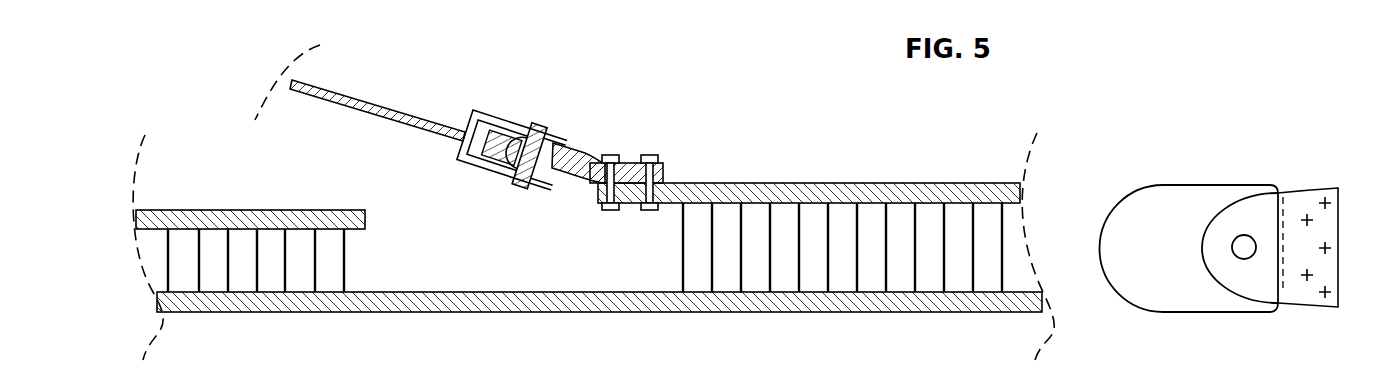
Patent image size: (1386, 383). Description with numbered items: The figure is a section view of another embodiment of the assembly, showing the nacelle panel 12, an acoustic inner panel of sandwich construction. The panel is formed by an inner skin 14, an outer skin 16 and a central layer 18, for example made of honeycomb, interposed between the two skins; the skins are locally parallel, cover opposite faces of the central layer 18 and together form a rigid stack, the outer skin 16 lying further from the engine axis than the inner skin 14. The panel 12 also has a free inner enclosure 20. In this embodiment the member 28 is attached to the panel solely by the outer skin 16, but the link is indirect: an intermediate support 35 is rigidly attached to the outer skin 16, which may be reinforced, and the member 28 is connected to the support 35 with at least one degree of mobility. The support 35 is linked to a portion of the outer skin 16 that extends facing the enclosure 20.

The nacelle panel 12 is at (747, 240).
The inner skin 14 is at (843, 300).
The outer skin 16 is at (850, 195).
The central layer 18 is at (257, 259).
The free inner enclosure 20 is at (527, 259).
The member 28 is at (530, 158).
The intermediate support 35 is at (578, 170).